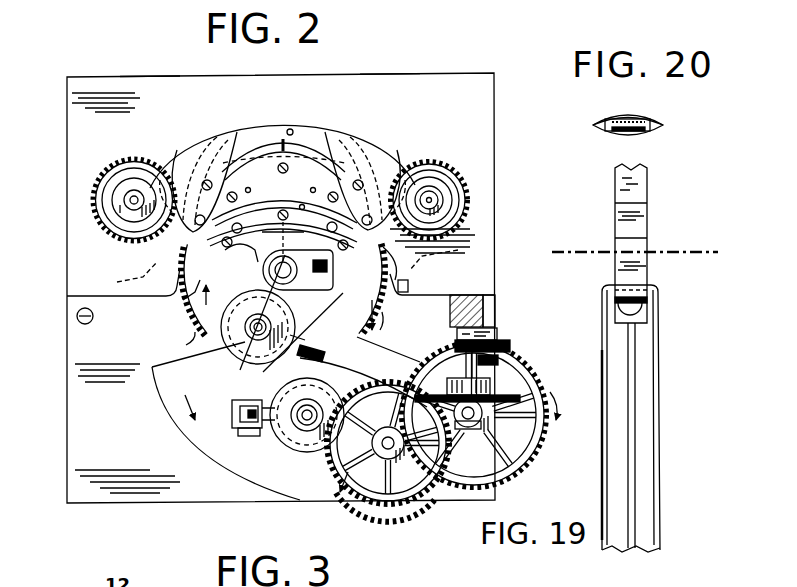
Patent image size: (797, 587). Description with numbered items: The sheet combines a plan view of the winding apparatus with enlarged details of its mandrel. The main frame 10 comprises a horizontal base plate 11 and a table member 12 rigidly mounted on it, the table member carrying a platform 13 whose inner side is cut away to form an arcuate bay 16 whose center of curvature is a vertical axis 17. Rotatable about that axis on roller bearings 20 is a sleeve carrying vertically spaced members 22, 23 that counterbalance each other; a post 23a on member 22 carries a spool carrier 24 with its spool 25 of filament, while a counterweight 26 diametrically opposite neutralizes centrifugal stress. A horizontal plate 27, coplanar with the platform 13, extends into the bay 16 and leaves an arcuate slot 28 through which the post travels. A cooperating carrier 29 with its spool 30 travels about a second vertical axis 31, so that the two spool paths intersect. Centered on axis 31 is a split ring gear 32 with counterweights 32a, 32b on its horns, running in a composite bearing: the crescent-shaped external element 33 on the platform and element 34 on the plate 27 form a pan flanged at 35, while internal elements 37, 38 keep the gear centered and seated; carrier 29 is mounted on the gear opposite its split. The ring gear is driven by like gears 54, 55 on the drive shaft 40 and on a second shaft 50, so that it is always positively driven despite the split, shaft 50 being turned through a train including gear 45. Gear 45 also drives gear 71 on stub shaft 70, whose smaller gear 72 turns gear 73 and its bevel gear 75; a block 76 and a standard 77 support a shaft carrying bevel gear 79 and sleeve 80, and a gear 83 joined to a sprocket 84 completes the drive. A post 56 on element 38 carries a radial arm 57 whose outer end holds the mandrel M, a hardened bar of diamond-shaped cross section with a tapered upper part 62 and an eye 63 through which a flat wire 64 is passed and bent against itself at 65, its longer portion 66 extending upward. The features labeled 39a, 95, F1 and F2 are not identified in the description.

In FIG. 2, the main frame 10 is at (66, 358).
In FIG. 2, the base plate 11 is at (95, 432).
In FIG. 2, the table member 12 is at (147, 75).
In FIG. 2, the platform 13 is at (390, 88).
In FIG. 2, the arcuate bay 16 is at (186, 298).
In FIG. 2, the vertical axis 17 is at (252, 365).
In FIG. 19, the roller bearings 20 is at (568, 250).
In FIG. 2, the member 22 is at (289, 262).
In FIG. 2, the member 23 is at (205, 414).
In FIG. 2, the post 23a is at (318, 400).
In FIG. 2, the spool carrier 24 is at (242, 436).
In FIG. 2, the spool of filament 25 is at (330, 420).
In FIG. 2, the counterweight 26 is at (290, 205).
In FIG. 2, the plate 27 is at (283, 222).
In FIG. 2, the arcuate slot 28 is at (295, 208).
In FIG. 2, the cooperating carrier 29 is at (330, 352).
In FIG. 2, the spool 30 is at (242, 341).
In FIG. 2, the vertical axis 31 is at (284, 230).
In FIG. 2, the split ring gear 32 is at (182, 320).
In FIG. 2, the counterweight 32a is at (370, 153).
In FIG. 2, the counterweight 32b is at (205, 150).
In FIG. 2, the bearing element 33 is at (305, 124).
In FIG. 2, the bearing element 34 is at (236, 246).
In FIG. 2, the flange 35 is at (290, 129).
In FIG. 2, the bearing element 37 is at (240, 168).
In FIG. 2, the bearing element 38 is at (348, 241).
In FIG. 2, the cam follower 39a is at (390, 263).
In FIG. 2, the drive shaft 40 is at (429, 200).
In FIG. 2, the gear 45 is at (188, 347).
In FIG. 2, the shaft 50 is at (134, 198).
In FIG. 2, the gear 54 is at (470, 172).
In FIG. 2, the gear 55 is at (93, 190).
In FIG. 2, the post 56 is at (285, 263).
In FIG. 2, the radial arm 57 is at (404, 286).
In FIG. 19, the upper part of the mandrel 62 is at (650, 497).
In FIG. 20, the upper part of the mandrel 62 is at (650, 117).
In FIG. 19, the eye 63 is at (641, 312).
In FIG. 20, the eye 63 is at (620, 133).
In FIG. 19, the flat wire 64 is at (649, 205).
In FIG. 20, the flat wire 64 is at (624, 114).
In FIG. 19, the bend 65 is at (636, 280).
In FIG. 20, the bend 65 is at (641, 131).
In FIG. 19, the longer portion of the wire 66 is at (620, 188).
In FIG. 2, the stub shaft 70 is at (378, 454).
In FIG. 2, the gear 71 is at (412, 502).
In FIG. 2, the smaller gear 72 is at (380, 505).
In FIG. 2, the gear 73 is at (522, 358).
In FIG. 2, the bevel gear 75 is at (447, 468).
In FIG. 2, the block 76 is at (488, 426).
In FIG. 2, the standard 77 is at (484, 305).
In FIG. 2, the bevel gear 79 is at (490, 418).
In FIG. 2, the sleeve 80 is at (462, 325).
In FIG. 2, the gear 83 is at (492, 340).
In FIG. 2, the sprocket 84 is at (522, 378).
In FIG. 2, the stop block 95 is at (482, 358).
In FIG. 2, the motor F1 is at (240, 398).
In FIG. 2, the hub housing F2 is at (298, 270).
In FIG. 19, the mandrel M is at (662, 405).
In FIG. 20, the mandrel M is at (596, 119).